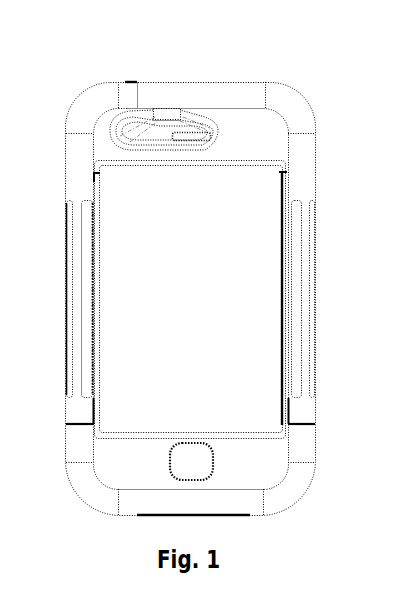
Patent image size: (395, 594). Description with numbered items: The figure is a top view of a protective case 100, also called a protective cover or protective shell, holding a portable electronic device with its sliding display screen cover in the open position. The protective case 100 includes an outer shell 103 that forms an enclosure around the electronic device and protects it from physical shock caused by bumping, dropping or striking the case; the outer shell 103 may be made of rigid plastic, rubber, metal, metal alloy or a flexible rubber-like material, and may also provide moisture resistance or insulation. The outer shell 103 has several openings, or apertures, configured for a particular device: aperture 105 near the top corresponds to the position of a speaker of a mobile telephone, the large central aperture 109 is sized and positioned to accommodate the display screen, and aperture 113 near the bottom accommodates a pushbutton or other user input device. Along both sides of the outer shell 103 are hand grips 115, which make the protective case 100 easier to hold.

The protective case 100 is at (190, 65).
The outer shell 103 is at (300, 115).
The aperture 105 is at (135, 79).
The aperture 109 is at (263, 198).
The aperture 113 is at (200, 460).
The hand grips 115 is at (87, 270).